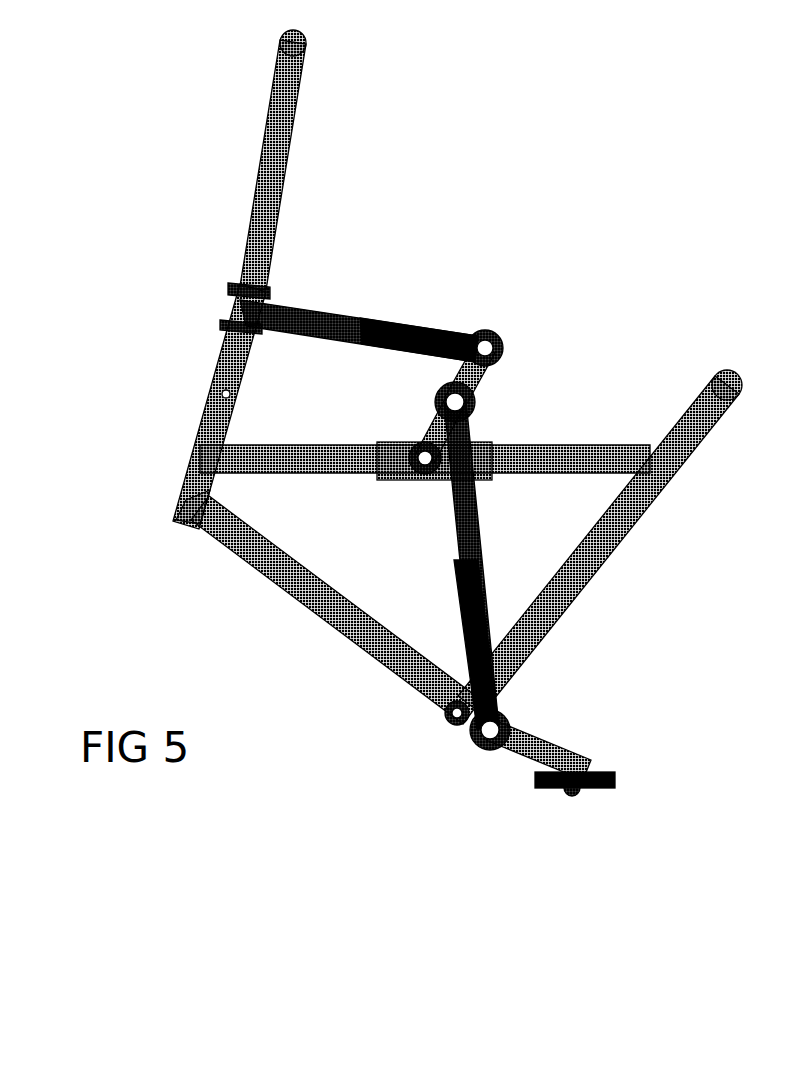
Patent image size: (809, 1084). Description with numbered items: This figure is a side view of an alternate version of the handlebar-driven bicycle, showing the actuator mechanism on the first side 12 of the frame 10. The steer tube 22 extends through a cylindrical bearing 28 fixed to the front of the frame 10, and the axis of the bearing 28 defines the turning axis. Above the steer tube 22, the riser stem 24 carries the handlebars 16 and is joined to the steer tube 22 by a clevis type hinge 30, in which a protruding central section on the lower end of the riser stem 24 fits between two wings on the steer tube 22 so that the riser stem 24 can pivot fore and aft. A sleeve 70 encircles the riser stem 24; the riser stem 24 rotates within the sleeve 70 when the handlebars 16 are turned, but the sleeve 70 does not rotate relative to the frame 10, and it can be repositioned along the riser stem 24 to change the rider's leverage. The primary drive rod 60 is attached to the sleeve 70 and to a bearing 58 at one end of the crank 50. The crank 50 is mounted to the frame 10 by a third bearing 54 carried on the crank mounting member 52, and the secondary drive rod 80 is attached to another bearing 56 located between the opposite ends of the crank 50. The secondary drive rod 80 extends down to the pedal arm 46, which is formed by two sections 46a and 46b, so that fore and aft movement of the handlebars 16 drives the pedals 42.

The frame 10 is at (277, 583).
The first side 12 is at (352, 646).
The handlebars 16 is at (285, 57).
The steer tube 22 is at (228, 352).
The riser stem 24 is at (262, 230).
The cylindrical bearing 28 is at (195, 475).
The hinge 30 is at (221, 393).
The pedals 42 is at (613, 773).
The pedal arm 46 is at (515, 732).
The first pedal arm section 46a is at (445, 717).
The second pedal arm section 46b is at (518, 762).
The crank 50 is at (432, 385).
The crank mounting member 52 is at (385, 472).
The third bearing 54 is at (418, 452).
The bearing 56 is at (477, 402).
The bearing 58 is at (470, 335).
The primary drive rod 60 is at (343, 328).
The sleeve 70 is at (228, 293).
The secondary drive rod 80 is at (470, 571).